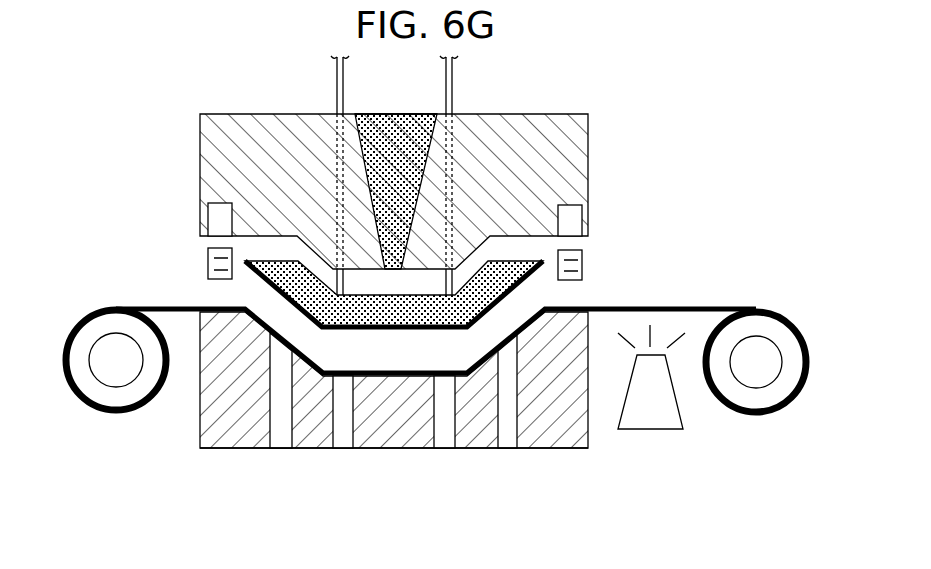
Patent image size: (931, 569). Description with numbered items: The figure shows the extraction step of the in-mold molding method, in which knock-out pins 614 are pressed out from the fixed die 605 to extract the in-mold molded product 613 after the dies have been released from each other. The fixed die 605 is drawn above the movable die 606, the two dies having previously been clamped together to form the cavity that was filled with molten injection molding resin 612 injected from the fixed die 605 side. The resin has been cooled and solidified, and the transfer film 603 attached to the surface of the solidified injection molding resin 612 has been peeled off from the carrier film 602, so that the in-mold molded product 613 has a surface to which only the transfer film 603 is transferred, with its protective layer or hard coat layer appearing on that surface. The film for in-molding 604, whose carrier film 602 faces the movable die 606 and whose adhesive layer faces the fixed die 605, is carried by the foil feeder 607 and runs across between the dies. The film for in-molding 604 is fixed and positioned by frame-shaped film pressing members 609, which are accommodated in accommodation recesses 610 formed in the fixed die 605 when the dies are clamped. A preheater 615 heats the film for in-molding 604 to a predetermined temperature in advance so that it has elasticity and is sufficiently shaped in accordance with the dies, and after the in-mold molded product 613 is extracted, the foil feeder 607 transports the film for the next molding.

The carrier film 602 is at (405, 383).
The transfer film 603 is at (274, 296).
The film for in-molding 604 is at (688, 307).
The fixed die 605 is at (548, 123).
The movable die 606 is at (394, 422).
The foil feeder 607 is at (755, 400).
The film pressing members 609 is at (582, 264).
The accommodation recesses 610 is at (568, 225).
The injection molding resin 612 is at (267, 262).
The in-mold molded product 613 is at (178, 245).
The knock-out pins 614 is at (456, 90).
The preheater 615 is at (665, 415).